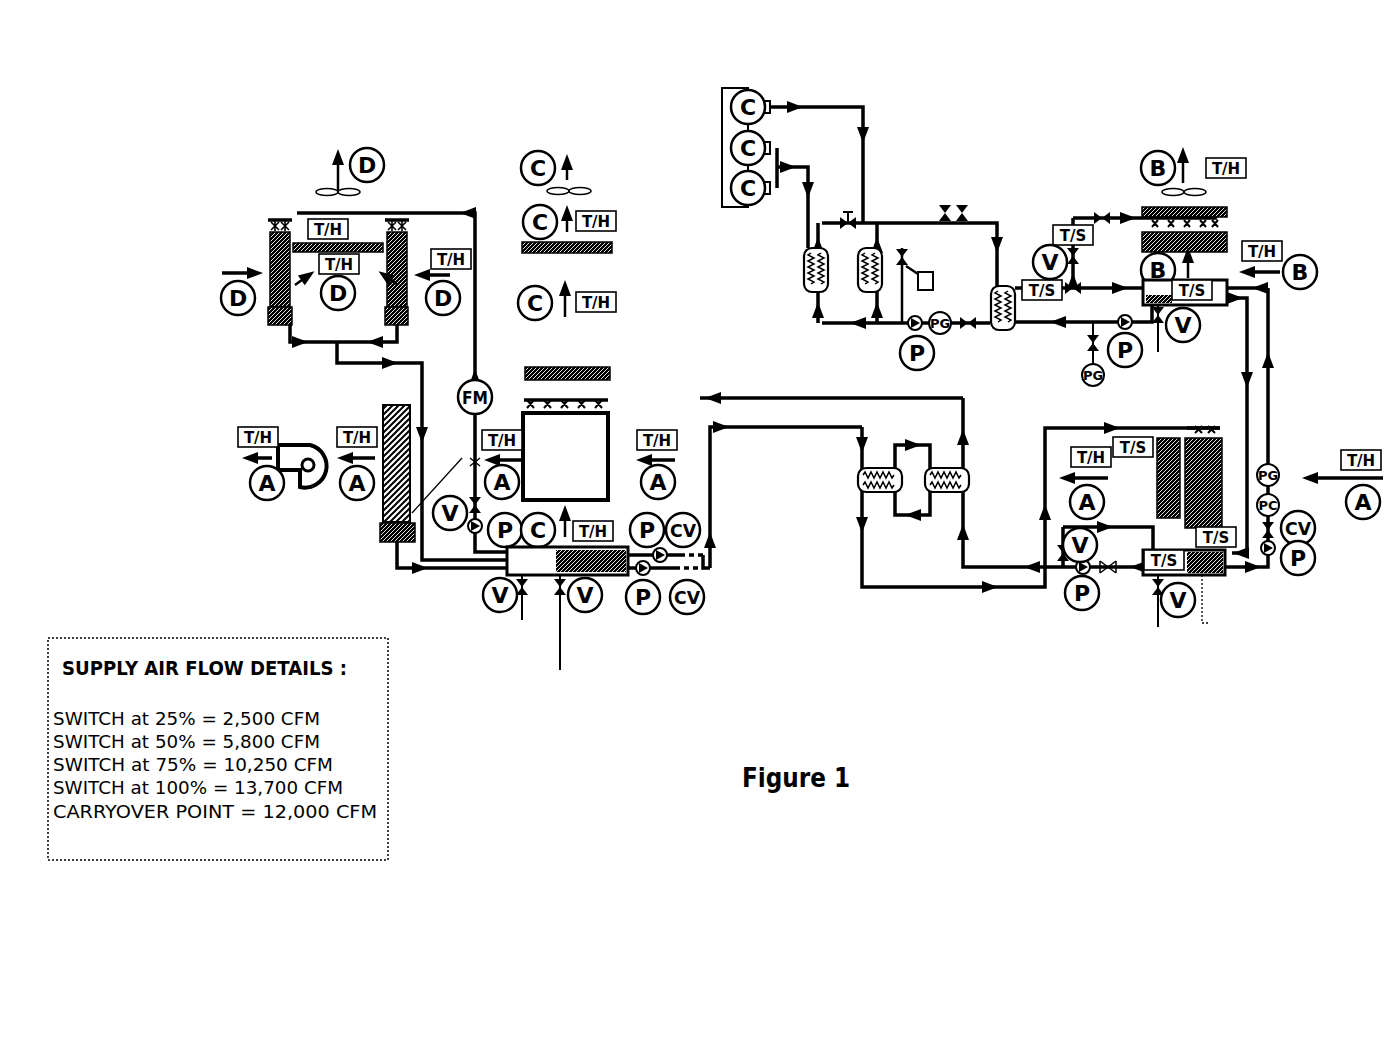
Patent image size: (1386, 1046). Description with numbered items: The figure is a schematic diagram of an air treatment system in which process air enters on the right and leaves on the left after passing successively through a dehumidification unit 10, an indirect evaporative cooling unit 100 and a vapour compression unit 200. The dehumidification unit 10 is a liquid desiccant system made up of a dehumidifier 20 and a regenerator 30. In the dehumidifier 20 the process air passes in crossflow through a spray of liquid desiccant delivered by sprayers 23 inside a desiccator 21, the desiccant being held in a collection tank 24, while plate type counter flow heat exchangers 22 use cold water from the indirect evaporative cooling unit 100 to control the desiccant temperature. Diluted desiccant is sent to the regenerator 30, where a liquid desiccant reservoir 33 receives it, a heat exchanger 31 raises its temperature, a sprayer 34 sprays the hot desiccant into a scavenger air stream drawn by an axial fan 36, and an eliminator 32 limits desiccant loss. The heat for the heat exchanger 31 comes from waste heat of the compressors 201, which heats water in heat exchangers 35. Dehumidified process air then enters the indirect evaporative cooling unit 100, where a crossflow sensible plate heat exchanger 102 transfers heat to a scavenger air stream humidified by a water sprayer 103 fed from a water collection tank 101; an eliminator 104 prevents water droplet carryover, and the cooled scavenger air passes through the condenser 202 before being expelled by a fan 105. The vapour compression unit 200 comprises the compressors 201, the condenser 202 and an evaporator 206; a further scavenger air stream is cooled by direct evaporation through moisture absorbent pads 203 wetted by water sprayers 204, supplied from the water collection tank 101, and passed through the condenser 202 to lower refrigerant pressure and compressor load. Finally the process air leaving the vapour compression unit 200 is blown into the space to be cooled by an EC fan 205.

The dehumidification unit 10 is at (1201, 541).
The dehumidifier 20 is at (1027, 539).
The desiccator 21 is at (1217, 452).
The heat exchangers 22 is at (850, 612).
The sprayers 23 is at (1220, 430).
The collection tank 24 is at (1208, 575).
The regenerator 30 is at (1024, 313).
The heat exchanger 31 is at (1003, 330).
The eliminator 32 is at (1228, 210).
The liquid desiccant reservoir 33 is at (1210, 307).
The sprayer 34 is at (1217, 222).
The heat exchangers 35 is at (795, 327).
The axial fan 36 is at (1202, 192).
The indirect evaporative cooling unit 100 is at (623, 394).
The water collection tank 101 is at (613, 575).
The crossflow sensible plate heat exchanger 102 is at (612, 428).
The water sprayer 103 is at (525, 392).
The eliminator 104 is at (610, 375).
The fan 105 is at (583, 190).
The vapour compression unit 200 is at (328, 349).
The compressors 201 is at (722, 138).
The condenser 202 is at (297, 212).
The moisture absorbent pads 203 is at (273, 260).
The water sprayers 204 is at (267, 220).
The EC fan 205 is at (293, 445).
The evaporator 206 is at (383, 490).